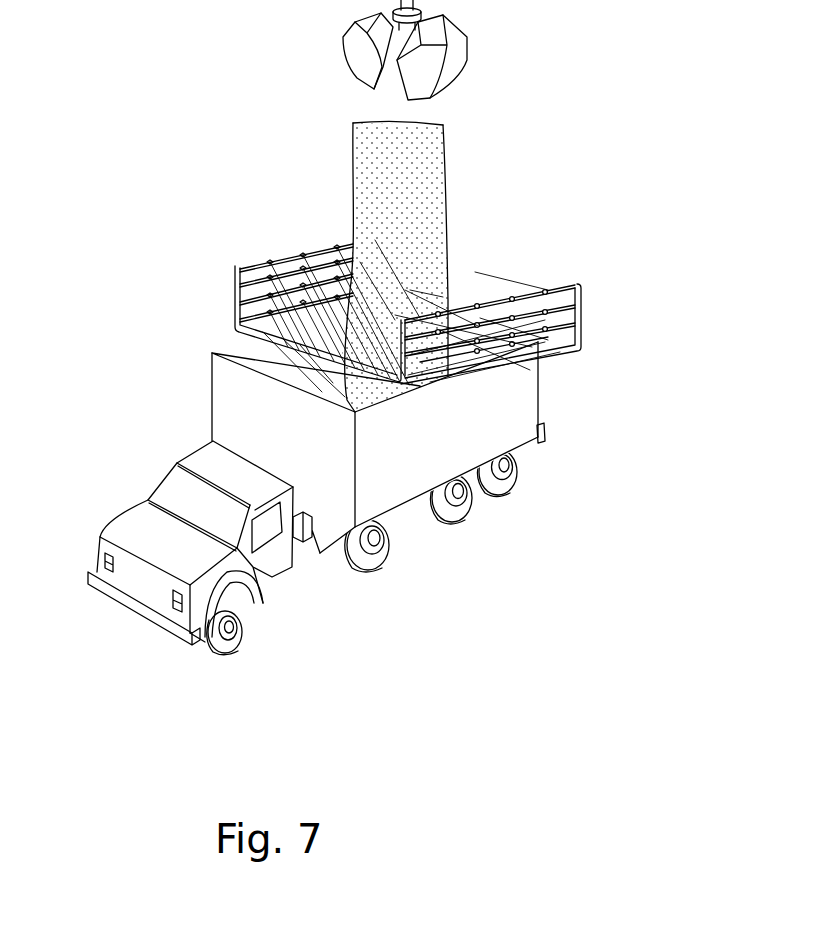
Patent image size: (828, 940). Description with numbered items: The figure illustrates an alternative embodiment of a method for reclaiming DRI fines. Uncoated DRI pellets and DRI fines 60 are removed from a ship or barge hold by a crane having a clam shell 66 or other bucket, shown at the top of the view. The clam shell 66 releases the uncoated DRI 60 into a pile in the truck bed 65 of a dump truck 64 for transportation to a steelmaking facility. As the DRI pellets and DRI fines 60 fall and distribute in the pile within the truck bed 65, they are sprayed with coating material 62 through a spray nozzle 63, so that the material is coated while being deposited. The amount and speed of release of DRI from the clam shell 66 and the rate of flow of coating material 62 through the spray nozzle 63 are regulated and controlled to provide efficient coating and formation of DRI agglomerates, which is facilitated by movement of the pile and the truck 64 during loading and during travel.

The DRI pellets and DRI fines 60 is at (443, 170).
The coating material 62 is at (500, 280).
The spray nozzle 63 is at (547, 293).
The dump truck 64 is at (513, 402).
The truck bed 65 is at (250, 355).
The clam shell 66 is at (357, 58).